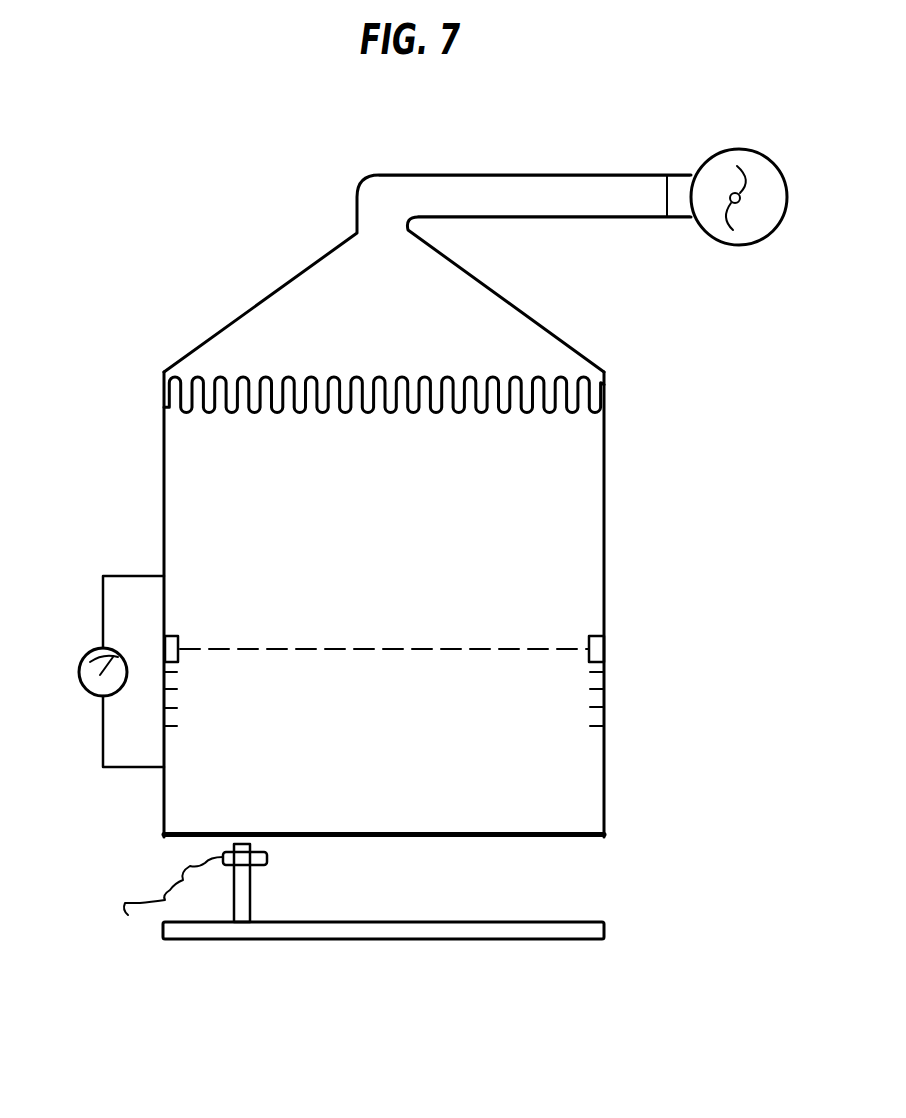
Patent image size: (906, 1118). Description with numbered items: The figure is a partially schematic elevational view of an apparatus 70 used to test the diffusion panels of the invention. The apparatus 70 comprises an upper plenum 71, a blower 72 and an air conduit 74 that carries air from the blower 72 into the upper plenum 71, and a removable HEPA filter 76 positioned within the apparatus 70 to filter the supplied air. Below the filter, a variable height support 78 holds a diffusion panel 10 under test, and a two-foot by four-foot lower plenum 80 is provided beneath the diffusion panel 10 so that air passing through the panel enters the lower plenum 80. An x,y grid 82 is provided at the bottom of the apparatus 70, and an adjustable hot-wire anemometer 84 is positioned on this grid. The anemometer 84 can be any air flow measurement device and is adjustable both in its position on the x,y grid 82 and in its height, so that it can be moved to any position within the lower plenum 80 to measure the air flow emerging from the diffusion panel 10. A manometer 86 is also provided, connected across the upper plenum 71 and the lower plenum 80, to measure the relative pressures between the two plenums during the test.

The diffusion panel 10 is at (385, 645).
The apparatus 70 is at (605, 504).
The upper plenum 71 is at (164, 503).
The blower 72 is at (742, 146).
The air conduit 74 is at (553, 173).
The removable HEPA filter 76 is at (605, 393).
The variable height support 78 is at (606, 656).
The lower plenum 80 is at (606, 793).
The x,y grid 82 is at (489, 921).
The adjustable hot-wire anemometer 84 is at (267, 860).
The manometer 86 is at (79, 663).